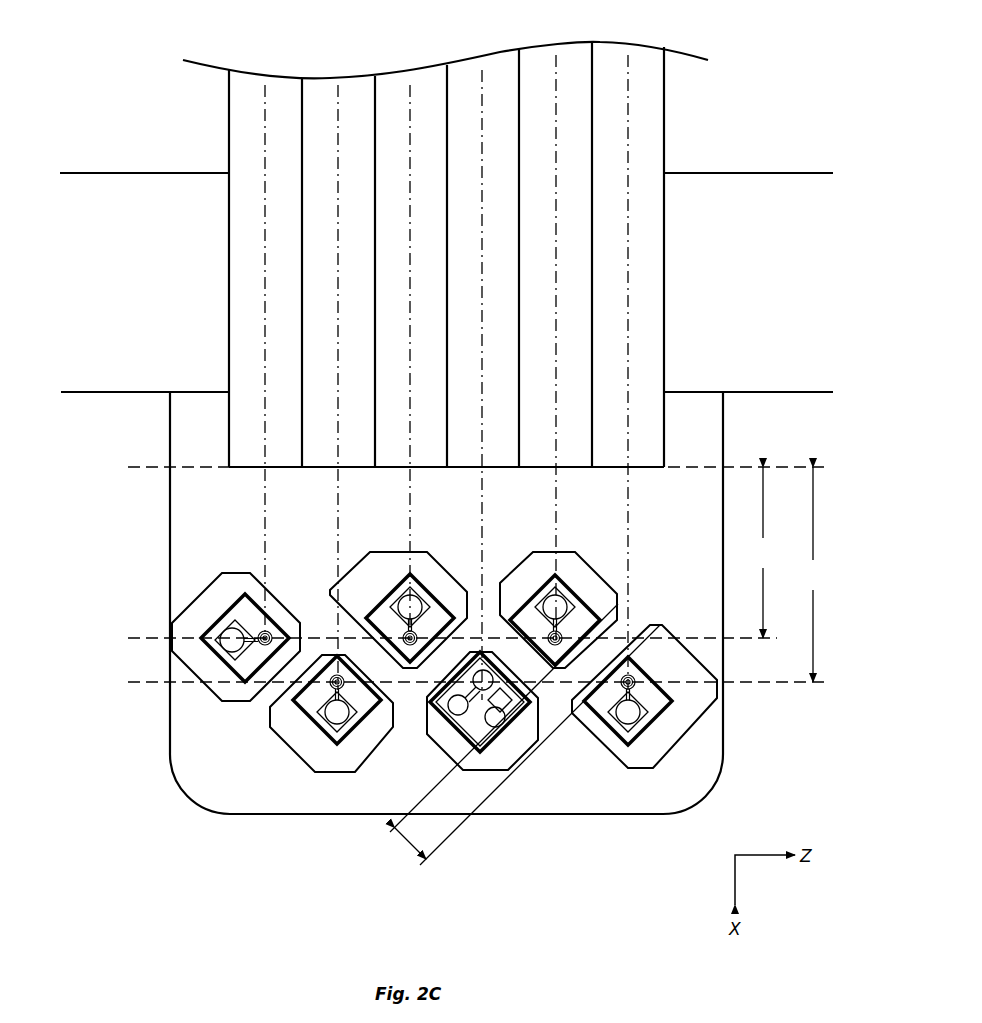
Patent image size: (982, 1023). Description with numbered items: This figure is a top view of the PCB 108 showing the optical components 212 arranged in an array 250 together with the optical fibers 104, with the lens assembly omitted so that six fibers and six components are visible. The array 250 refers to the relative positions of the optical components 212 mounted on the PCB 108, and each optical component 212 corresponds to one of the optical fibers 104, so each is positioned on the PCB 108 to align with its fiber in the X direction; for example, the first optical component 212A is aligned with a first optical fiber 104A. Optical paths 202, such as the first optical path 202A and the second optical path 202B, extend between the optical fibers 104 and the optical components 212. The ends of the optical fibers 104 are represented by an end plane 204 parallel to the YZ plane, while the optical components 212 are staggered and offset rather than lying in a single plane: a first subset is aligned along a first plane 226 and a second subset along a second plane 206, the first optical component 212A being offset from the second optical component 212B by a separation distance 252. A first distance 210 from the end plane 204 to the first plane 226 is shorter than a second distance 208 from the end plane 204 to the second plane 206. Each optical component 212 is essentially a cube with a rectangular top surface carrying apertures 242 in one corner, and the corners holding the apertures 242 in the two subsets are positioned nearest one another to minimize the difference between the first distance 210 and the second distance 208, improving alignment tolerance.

The optical fibers 104 is at (229, 143).
The first optical fiber 104A is at (655, 135).
The optical paths 202 is at (262, 90).
The first optical path 202A is at (628, 50).
The second optical path 202B is at (555, 52).
The PCB 108 is at (117, 949).
The optical fiber end plane 204 is at (153, 467).
The first plane 226 is at (153, 638).
The second plane 206 is at (153, 682).
The second distance 208 is at (814, 574).
The first distance 210 is at (766, 552).
The optical components 212 is at (383, 600).
The first optical component 212A is at (655, 722).
The second optical component 212B is at (597, 580).
The apertures 242 is at (258, 634).
The array 250 is at (140, 583).
The separation distance 252 is at (413, 843).